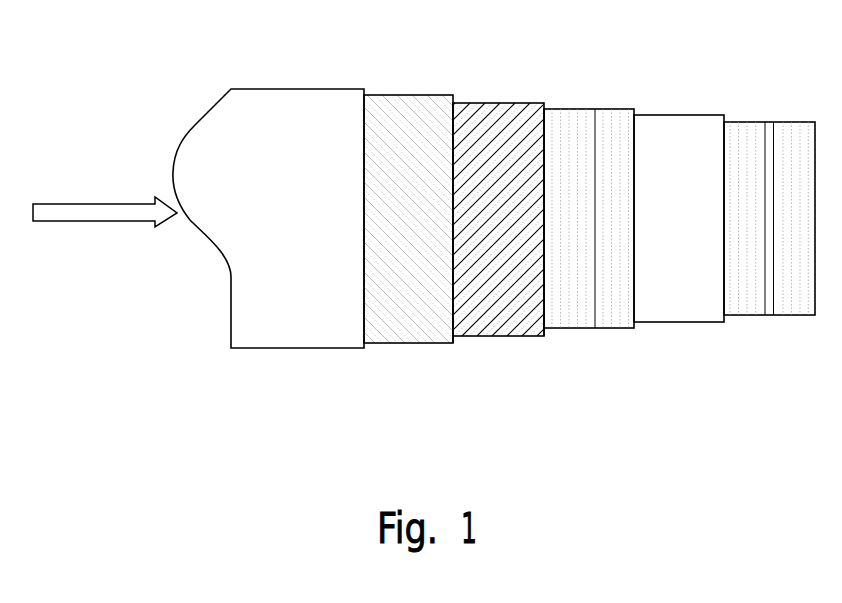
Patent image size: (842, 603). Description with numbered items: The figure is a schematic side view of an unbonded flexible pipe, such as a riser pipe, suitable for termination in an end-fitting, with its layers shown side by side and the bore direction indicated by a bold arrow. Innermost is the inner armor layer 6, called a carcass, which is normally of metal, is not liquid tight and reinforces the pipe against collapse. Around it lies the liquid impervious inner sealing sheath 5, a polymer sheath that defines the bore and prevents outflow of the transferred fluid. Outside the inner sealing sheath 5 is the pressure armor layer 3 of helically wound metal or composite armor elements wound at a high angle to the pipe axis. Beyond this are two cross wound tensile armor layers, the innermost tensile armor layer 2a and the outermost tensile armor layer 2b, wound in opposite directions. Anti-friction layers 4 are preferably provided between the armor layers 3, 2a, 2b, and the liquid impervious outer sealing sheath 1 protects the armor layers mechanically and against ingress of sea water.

The liquid impervious outer sealing sheath 1 is at (301, 112).
The innermost tensile armor layer 2a is at (500, 118).
The outermost tensile armor layer 2b is at (412, 112).
The pressure armor layer 3 is at (605, 310).
The anti-friction layers 4 is at (455, 343).
The liquid impervious inner sealing sheath 5 is at (683, 313).
The inner armor layer (carcass) 6 is at (763, 299).